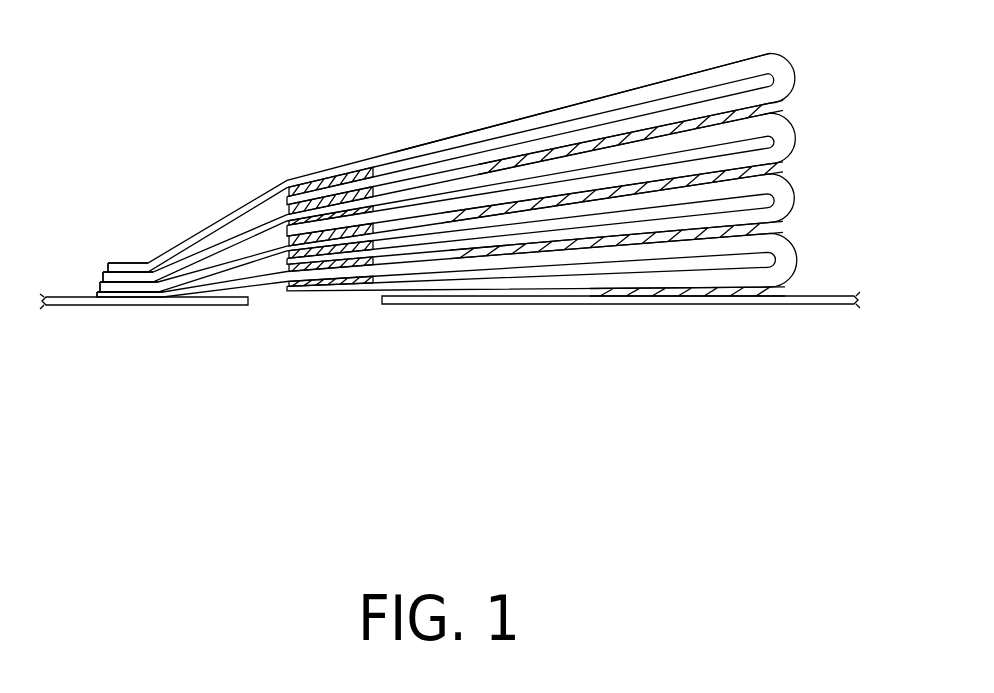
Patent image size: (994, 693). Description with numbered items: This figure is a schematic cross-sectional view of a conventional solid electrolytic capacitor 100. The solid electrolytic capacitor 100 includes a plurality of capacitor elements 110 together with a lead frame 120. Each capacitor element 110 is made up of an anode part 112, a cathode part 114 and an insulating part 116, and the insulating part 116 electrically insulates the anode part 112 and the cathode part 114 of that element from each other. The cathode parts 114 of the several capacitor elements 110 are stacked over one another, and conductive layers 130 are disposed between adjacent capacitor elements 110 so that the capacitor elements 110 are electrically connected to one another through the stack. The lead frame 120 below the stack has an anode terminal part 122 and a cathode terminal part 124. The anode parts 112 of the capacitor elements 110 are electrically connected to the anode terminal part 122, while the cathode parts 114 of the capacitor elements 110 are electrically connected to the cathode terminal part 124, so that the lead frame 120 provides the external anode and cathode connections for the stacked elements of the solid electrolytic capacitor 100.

The solid electrolytic capacitor 100 is at (474, 273).
The capacitor element 110 is at (794, 72).
The anode part 112 is at (123, 262).
The cathode part 114 is at (570, 105).
The insulating part 116 is at (333, 168).
The lead frame 120 is at (450, 402).
The anode terminal part 122 is at (220, 299).
The cathode terminal part 124 is at (450, 304).
The conductive layer 130 is at (785, 108).